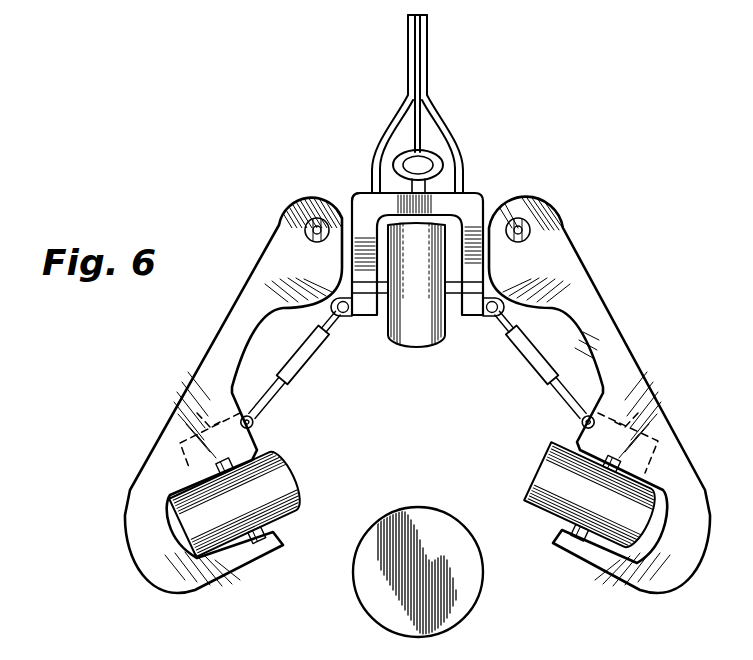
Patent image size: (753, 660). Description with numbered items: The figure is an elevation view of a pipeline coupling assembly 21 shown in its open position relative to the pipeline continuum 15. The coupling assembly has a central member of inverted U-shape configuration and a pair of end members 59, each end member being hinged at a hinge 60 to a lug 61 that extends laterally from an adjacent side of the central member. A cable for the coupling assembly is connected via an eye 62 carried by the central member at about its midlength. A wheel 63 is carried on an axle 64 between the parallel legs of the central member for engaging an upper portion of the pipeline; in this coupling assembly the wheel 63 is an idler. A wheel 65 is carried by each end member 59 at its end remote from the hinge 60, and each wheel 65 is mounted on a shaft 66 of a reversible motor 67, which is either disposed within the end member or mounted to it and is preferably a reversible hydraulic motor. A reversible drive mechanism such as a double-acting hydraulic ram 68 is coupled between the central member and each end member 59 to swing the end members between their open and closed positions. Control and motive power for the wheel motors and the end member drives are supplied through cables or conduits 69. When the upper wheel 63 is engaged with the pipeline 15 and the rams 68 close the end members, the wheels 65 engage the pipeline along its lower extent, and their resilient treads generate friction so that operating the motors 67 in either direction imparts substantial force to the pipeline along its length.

The pipeline continuum 15 is at (470, 610).
The coupling assembly 21 is at (632, 107).
The end member 59 is at (238, 303).
The hinge 60 is at (314, 215).
The lug 61 is at (347, 196).
The eye 62 is at (396, 158).
The wheel 63 is at (421, 348).
The axle 64 is at (455, 296).
The wheel 65 is at (307, 468).
The shaft 66 is at (262, 528).
The reversible motor 67 is at (185, 393).
The double-acting hydraulic ram 68 is at (302, 372).
The conduits 69 is at (378, 162).